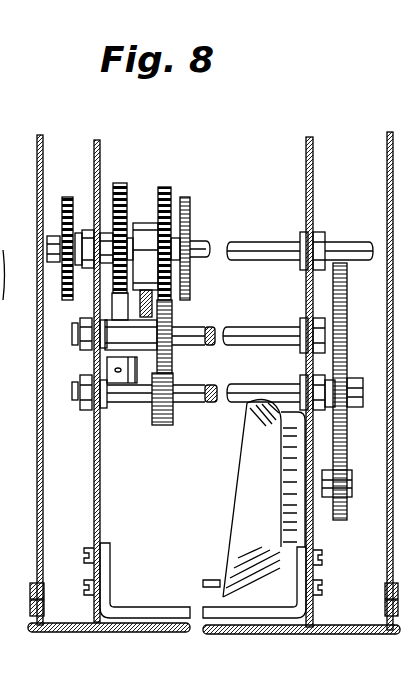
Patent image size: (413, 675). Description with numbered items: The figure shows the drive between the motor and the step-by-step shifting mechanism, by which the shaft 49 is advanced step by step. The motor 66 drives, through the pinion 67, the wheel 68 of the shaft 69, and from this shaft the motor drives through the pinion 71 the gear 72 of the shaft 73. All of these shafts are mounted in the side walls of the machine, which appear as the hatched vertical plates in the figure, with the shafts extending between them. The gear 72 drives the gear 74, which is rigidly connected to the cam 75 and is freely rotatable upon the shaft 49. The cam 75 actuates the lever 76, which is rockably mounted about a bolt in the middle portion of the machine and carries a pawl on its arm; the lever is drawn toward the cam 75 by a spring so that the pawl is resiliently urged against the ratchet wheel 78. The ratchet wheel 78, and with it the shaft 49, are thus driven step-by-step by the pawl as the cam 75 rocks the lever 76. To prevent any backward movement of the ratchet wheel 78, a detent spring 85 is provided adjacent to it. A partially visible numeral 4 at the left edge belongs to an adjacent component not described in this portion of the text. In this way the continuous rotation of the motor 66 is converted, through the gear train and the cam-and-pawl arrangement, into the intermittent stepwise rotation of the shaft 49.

The adjacent component (partial) 4 is at (5, 219).
The shaft 49 is at (248, 247).
The motor 66 is at (230, 532).
The pinion 67 is at (340, 515).
The wheel 68 is at (345, 438).
The shaft 69 is at (207, 405).
The pinion 71 is at (164, 427).
The gear 72 is at (172, 363).
The shaft 73 is at (267, 337).
The gear 74 is at (167, 185).
The cam 75 is at (145, 247).
The lever 76 is at (160, 312).
The ratchet wheel 78 is at (120, 183).
The detent spring 85 is at (120, 307).